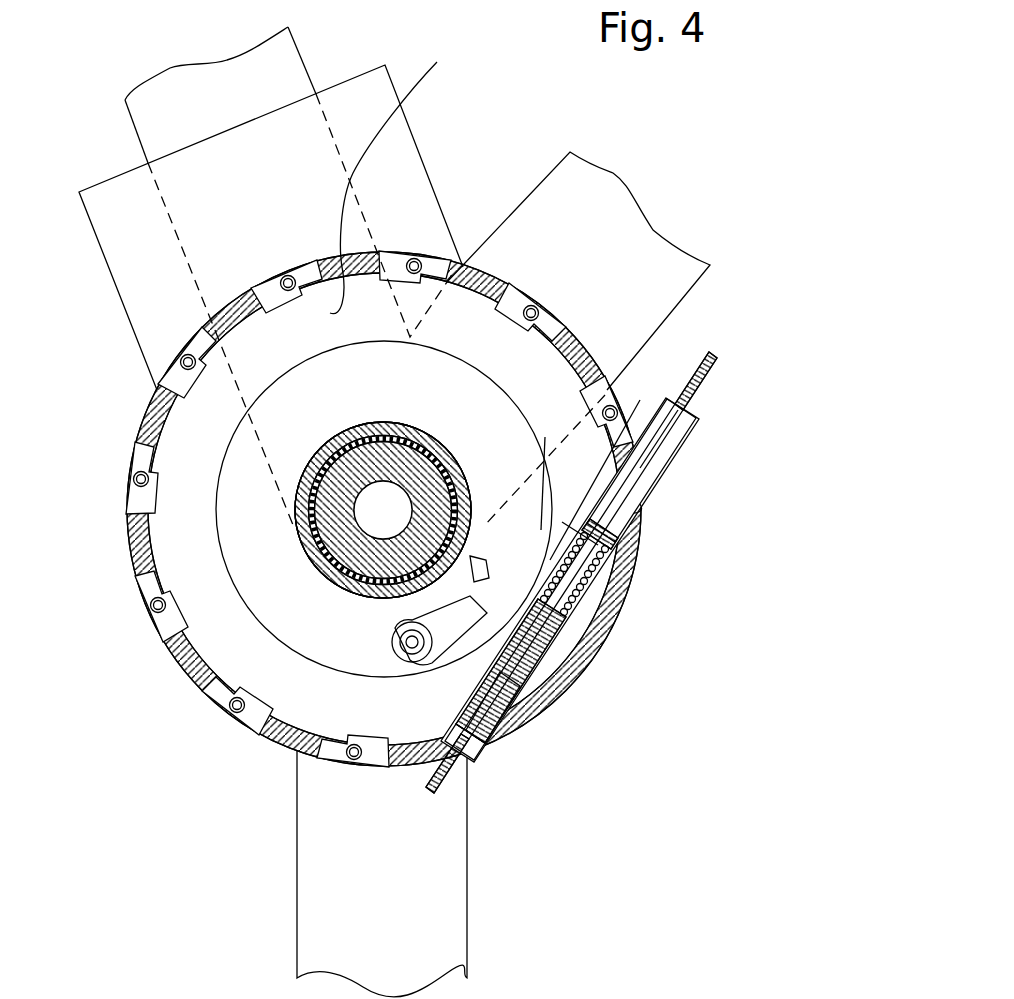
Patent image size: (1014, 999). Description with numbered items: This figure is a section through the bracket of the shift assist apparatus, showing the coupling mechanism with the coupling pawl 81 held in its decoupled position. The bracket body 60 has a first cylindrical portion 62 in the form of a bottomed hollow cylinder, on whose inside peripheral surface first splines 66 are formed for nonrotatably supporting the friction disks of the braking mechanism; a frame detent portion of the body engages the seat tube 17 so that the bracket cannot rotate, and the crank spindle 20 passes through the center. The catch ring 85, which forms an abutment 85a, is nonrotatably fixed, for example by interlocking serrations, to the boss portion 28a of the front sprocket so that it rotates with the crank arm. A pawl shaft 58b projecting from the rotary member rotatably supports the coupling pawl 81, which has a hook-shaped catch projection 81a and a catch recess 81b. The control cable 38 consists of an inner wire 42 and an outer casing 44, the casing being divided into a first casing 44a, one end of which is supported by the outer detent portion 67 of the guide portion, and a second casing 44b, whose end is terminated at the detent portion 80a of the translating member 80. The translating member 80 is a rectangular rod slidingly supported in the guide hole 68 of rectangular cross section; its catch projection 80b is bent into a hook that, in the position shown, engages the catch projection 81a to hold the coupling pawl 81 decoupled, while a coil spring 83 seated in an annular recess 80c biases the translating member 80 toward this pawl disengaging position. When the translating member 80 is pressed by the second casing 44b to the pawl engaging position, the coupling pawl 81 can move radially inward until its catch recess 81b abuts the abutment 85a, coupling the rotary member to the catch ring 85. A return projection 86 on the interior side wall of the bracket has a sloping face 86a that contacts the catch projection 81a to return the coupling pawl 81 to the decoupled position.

The seat tube 17 is at (283, 50).
The crank spindle 20 is at (333, 580).
The boss portion 28a is at (318, 537).
The control cable 38 is at (690, 425).
The inner wire 42 is at (716, 362).
The outer casing 44 is at (553, 632).
The first casing 44a is at (660, 452).
The second casing 44b is at (470, 765).
The pawl shaft 58b is at (403, 645).
The bracket body 60 is at (423, 253).
The first cylindrical portion 62 is at (400, 257).
The first splines 66 is at (399, 173).
The outer detent portion 67 is at (638, 503).
The guide hole 68 is at (287, 748).
The translating member 80 is at (565, 625).
The detent portion 80a is at (527, 690).
The catch projection 80b is at (527, 713).
The annular recess 80c is at (592, 556).
The coupling pawl 81 is at (422, 618).
The catch projection 81a is at (580, 530).
The catch recess 81b is at (549, 463).
The coil spring 83 is at (588, 582).
The catch ring 85 is at (297, 497).
The abutment 85a is at (453, 477).
The return projection 86 is at (473, 567).
The sloping face 86a is at (616, 463).